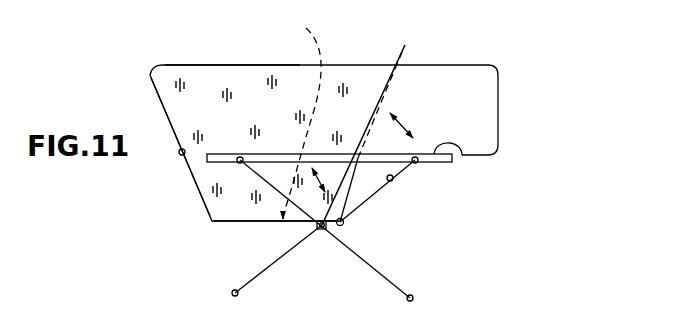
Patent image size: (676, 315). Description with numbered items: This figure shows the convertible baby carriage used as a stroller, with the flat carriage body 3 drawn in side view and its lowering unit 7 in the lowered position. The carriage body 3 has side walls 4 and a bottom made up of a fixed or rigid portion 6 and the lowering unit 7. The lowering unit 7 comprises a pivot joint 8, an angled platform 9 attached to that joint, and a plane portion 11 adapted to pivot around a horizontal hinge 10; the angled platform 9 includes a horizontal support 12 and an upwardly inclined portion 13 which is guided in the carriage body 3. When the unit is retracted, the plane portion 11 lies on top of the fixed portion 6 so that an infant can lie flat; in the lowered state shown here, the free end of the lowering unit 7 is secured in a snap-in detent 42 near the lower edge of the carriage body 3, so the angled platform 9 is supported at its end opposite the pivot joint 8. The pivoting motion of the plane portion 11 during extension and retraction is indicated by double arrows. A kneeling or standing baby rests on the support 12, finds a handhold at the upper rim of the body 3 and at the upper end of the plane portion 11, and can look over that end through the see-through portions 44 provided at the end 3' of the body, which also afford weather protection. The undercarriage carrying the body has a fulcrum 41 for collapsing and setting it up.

The carriage body 3 is at (361, 112).
The end of carriage body 3' is at (243, 102).
The side walls 4 is at (488, 112).
The fixed portion 6 is at (458, 152).
The lowering unit 7 is at (388, 88).
The pivot joint 8 is at (345, 224).
The angled platform 9 is at (202, 232).
The horizontal hinge 10 is at (376, 152).
The plane portion 11 is at (403, 45).
The horizontal support 12 is at (242, 222).
The inclined portion 13 is at (200, 188).
The fulcrum 41 is at (322, 232).
The snap-in detent 42 is at (180, 156).
The see-through portions 44 is at (182, 108).